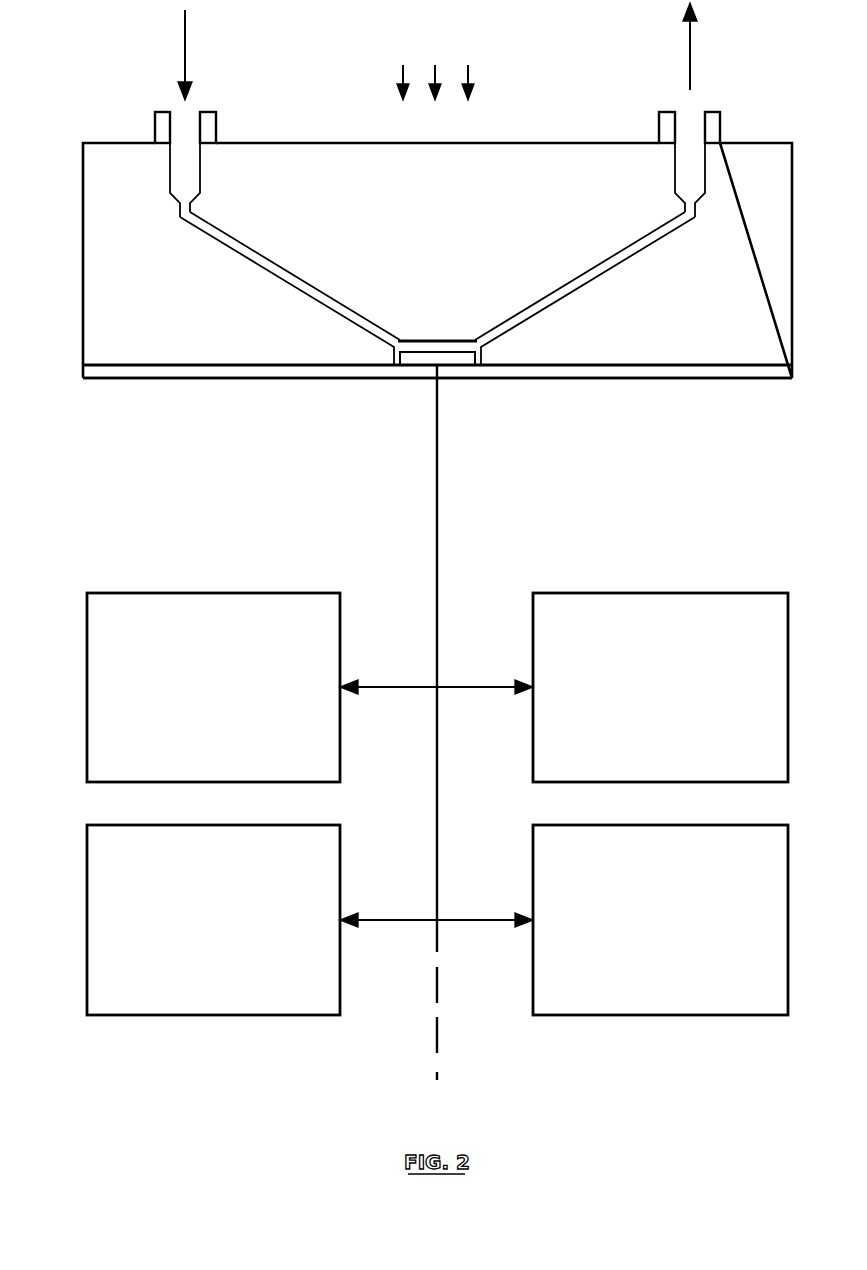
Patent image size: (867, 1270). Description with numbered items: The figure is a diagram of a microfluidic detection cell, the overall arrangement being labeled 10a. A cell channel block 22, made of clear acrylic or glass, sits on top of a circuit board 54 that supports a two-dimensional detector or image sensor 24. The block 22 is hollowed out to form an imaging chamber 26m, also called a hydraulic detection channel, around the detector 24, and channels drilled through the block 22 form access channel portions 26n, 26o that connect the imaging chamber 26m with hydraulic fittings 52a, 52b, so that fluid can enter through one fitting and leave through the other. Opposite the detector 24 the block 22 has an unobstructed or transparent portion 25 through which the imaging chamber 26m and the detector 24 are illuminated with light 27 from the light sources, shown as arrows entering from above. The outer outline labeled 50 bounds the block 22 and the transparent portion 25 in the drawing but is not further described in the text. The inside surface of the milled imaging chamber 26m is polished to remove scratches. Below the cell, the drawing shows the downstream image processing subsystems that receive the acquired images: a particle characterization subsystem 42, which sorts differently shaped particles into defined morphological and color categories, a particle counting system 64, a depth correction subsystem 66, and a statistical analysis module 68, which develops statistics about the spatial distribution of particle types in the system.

The sensing system 10a is at (84, 1105).
The cell channel block 22 is at (180, 381).
The image sensor 24 is at (413, 368).
The transparent portion 25 is at (450, 233).
The imaging chamber 26m is at (437, 338).
The inlet channel 26n is at (318, 300).
The outlet channel 26o is at (565, 295).
The light 27 is at (437, 51).
The particle characterization subsystem 42 is at (213, 590).
The housing 50 is at (83, 347).
The hydraulic fitting 52a is at (175, 195).
The hydraulic fitting 52b is at (700, 196).
The circuit board 54 is at (682, 377).
The particle counting system 64 is at (658, 590).
The depth correction subsystem 66 is at (213, 822).
The statistical analysis module 68 is at (658, 822).